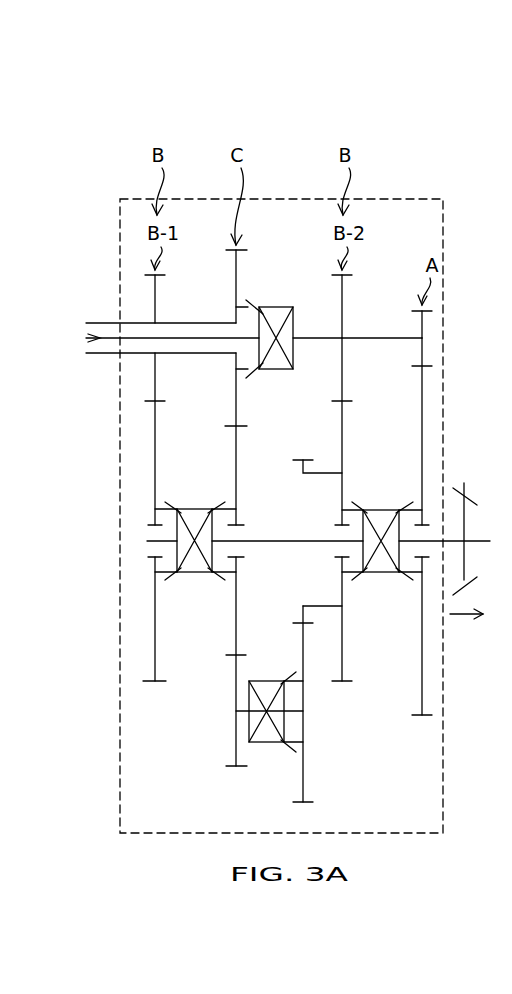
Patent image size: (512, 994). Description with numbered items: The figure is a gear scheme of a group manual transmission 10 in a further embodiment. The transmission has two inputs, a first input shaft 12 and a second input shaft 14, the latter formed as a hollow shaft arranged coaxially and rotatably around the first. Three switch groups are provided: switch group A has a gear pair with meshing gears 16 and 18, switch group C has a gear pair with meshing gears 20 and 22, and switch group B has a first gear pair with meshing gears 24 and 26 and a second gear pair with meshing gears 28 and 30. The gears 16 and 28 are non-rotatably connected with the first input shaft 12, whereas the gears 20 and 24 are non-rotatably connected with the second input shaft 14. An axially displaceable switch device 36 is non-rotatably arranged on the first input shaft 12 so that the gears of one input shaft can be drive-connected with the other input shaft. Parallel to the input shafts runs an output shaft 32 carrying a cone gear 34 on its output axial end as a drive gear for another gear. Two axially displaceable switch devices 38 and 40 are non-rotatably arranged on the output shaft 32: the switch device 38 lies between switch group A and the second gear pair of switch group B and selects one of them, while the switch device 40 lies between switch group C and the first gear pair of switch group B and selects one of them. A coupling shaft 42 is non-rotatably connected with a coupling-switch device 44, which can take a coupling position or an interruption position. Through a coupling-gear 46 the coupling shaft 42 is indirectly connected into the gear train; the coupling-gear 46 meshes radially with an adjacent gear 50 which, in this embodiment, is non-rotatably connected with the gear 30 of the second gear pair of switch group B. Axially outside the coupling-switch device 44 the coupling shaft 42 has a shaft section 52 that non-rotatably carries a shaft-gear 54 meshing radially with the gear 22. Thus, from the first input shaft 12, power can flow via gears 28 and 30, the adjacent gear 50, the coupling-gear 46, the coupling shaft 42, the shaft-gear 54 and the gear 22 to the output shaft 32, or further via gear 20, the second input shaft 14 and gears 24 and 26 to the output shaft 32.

The group manual transmission 10 is at (298, 127).
The first input shaft 12 is at (107, 343).
The second input shaft 14 is at (104, 322).
The gear 16 is at (424, 328).
The gear 18 is at (424, 384).
The gear 20 is at (238, 270).
The gear 22 is at (238, 448).
The gear 24 is at (157, 293).
The gear 26 is at (157, 431).
The gear 28 is at (344, 299).
The gear 30 is at (344, 429).
The output shaft 32 is at (437, 545).
The cone gear 34 is at (463, 483).
The switch device 36 is at (283, 369).
The switch device 38 is at (373, 510).
The switch device 40 is at (185, 572).
The coupling shaft 42 is at (241, 718).
The coupling-switch device 44 is at (275, 742).
The coupling-gear 46 is at (305, 765).
The adjacent gear 50 is at (303, 612).
The shaft section 52 is at (240, 702).
The shaft-gear 54 is at (234, 677).